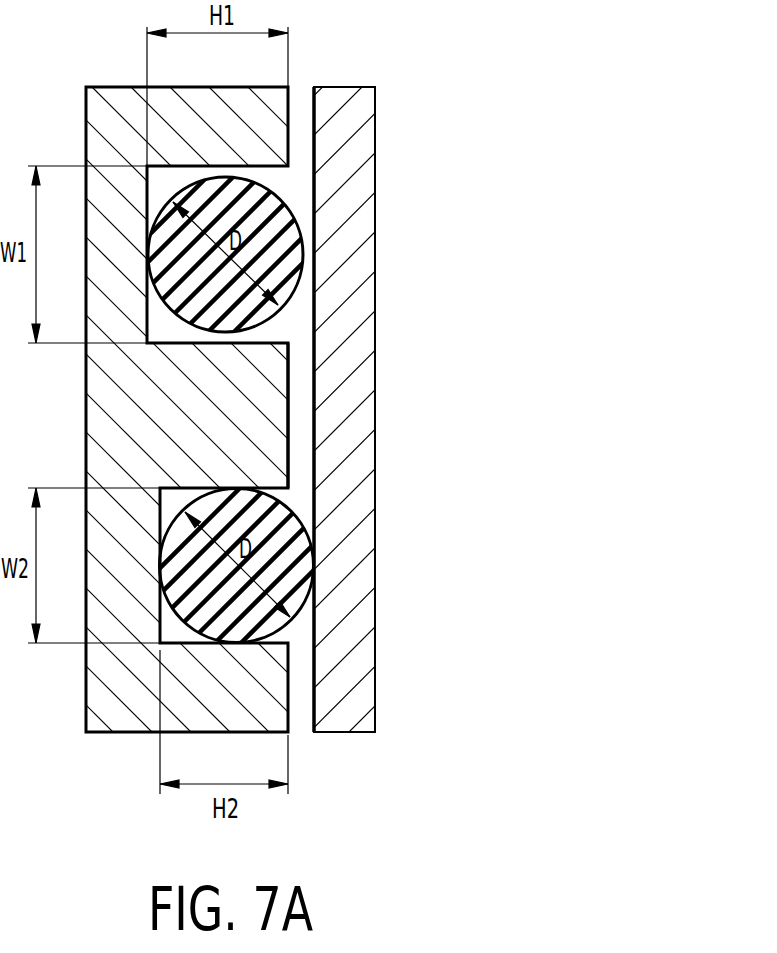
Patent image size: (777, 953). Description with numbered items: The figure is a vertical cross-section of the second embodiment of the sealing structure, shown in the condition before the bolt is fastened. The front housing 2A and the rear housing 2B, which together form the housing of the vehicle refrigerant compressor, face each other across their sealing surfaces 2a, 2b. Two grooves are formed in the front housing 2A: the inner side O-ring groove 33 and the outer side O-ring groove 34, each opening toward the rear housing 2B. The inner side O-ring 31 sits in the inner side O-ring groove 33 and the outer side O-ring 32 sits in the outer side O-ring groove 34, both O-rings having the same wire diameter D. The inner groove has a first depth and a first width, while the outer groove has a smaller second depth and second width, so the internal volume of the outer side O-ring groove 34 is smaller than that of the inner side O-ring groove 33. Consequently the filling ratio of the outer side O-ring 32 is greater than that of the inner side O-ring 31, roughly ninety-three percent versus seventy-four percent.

The front housing 2A is at (118, 85).
The rear housing 2B is at (360, 86).
The sealing surface 2a is at (289, 405).
The sealing surface 2b is at (316, 134).
The inner side O-ring 31 is at (293, 236).
The outer side O-ring 32 is at (297, 552).
The inner side O-ring groove 33 is at (267, 330).
The outer side O-ring groove 34 is at (282, 635).